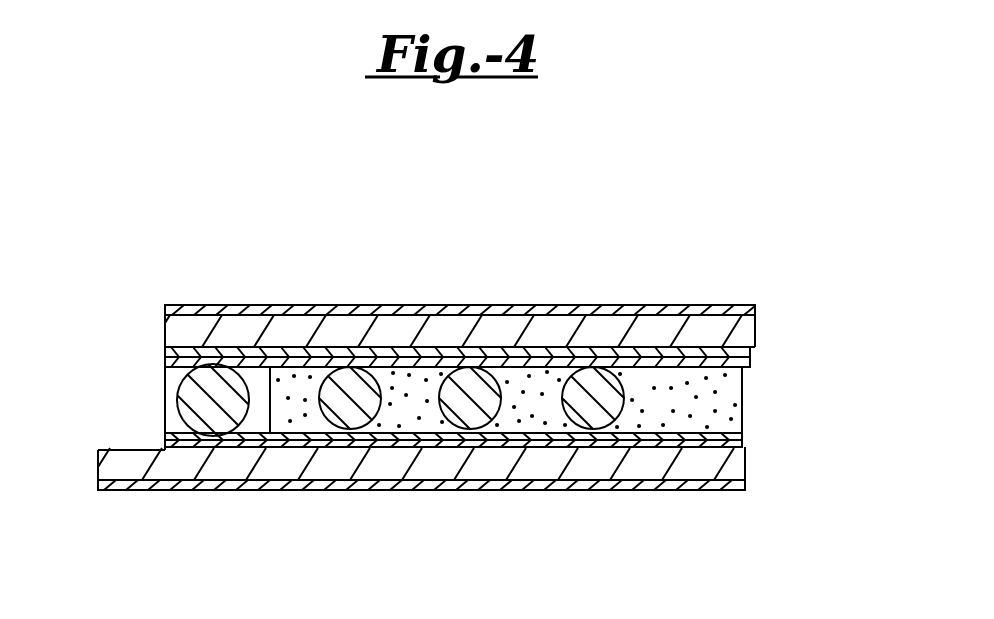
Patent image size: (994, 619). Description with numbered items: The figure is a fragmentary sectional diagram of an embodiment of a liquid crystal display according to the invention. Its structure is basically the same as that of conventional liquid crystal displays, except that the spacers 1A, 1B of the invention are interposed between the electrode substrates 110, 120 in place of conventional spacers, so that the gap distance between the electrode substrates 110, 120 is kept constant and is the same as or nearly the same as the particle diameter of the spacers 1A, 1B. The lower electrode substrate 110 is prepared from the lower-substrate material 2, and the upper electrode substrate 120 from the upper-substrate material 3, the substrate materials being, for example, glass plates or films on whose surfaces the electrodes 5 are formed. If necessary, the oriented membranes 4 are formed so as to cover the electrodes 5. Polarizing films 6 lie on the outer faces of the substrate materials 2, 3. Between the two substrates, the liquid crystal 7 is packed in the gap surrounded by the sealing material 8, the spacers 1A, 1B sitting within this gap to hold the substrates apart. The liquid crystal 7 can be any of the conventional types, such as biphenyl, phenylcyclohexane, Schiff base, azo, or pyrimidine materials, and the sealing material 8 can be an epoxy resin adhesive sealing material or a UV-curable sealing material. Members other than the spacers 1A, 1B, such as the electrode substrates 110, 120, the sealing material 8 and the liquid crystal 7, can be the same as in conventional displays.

The upper-substrate material 3 is at (160, 367).
The spacer 1B is at (226, 392).
The liquid crystal 7 is at (408, 393).
The spacer 1A is at (638, 387).
The polarizing films 6 is at (755, 307).
The oriented membranes 4 is at (485, 382).
The electrodes 5 is at (522, 382).
The lower-substrate material 2 is at (92, 482).
The sealing material 8 is at (255, 423).
The electrode substrate 120 is at (416, 299).
The electrode substrate 110 is at (377, 435).